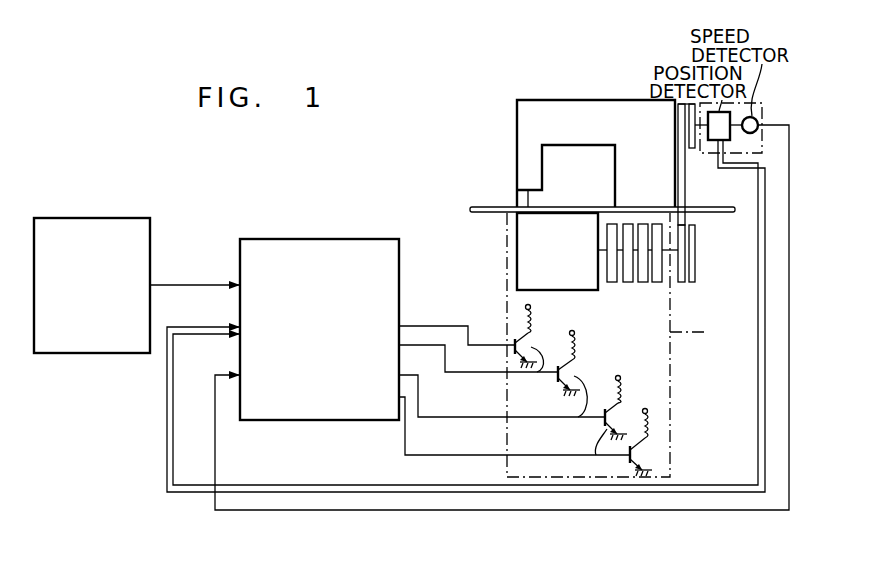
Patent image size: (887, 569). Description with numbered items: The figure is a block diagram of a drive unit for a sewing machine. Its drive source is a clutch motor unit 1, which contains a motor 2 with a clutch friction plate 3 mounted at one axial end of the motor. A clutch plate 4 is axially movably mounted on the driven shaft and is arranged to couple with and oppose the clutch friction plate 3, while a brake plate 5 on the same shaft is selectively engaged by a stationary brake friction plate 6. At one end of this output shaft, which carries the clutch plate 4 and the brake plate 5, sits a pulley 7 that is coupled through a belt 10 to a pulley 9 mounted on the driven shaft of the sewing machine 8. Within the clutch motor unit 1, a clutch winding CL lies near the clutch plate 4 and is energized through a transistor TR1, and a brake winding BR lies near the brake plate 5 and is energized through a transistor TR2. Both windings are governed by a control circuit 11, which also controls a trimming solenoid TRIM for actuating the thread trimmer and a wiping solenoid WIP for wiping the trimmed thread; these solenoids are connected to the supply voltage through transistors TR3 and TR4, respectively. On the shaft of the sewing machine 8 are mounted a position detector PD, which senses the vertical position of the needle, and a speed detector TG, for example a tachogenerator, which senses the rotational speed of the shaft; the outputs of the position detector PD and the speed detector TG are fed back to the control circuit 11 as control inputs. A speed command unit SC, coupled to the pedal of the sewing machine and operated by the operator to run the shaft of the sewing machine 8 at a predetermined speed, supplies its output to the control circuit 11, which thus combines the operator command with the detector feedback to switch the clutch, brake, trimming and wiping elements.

The speed command unit SC is at (98, 218).
The control circuit 11 is at (330, 239).
The sewing machine 8 is at (584, 100).
The clutch motor unit 1 is at (706, 331).
The motor 2 is at (517, 257).
The clutch friction plate 3 is at (612, 282).
The clutch plate 4 is at (628, 282).
The brake plate 5 is at (643, 282).
The stationary brake friction plate 6 is at (657, 282).
The pulley 7 is at (688, 282).
The pulley 9 is at (688, 150).
The belt 10 is at (686, 185).
The position detector PD is at (730, 142).
The speed detector TG is at (757, 119).
The clutch winding CL is at (531, 322).
The brake winding BR is at (575, 350).
The transistor TR1 is at (529, 369).
The transistor TR2 is at (566, 404).
The transistor TR3 is at (601, 442).
The transistor TR4 is at (652, 467).
The trimming solenoid TRIM is at (622, 392).
The wiping solenoid WIP is at (649, 426).